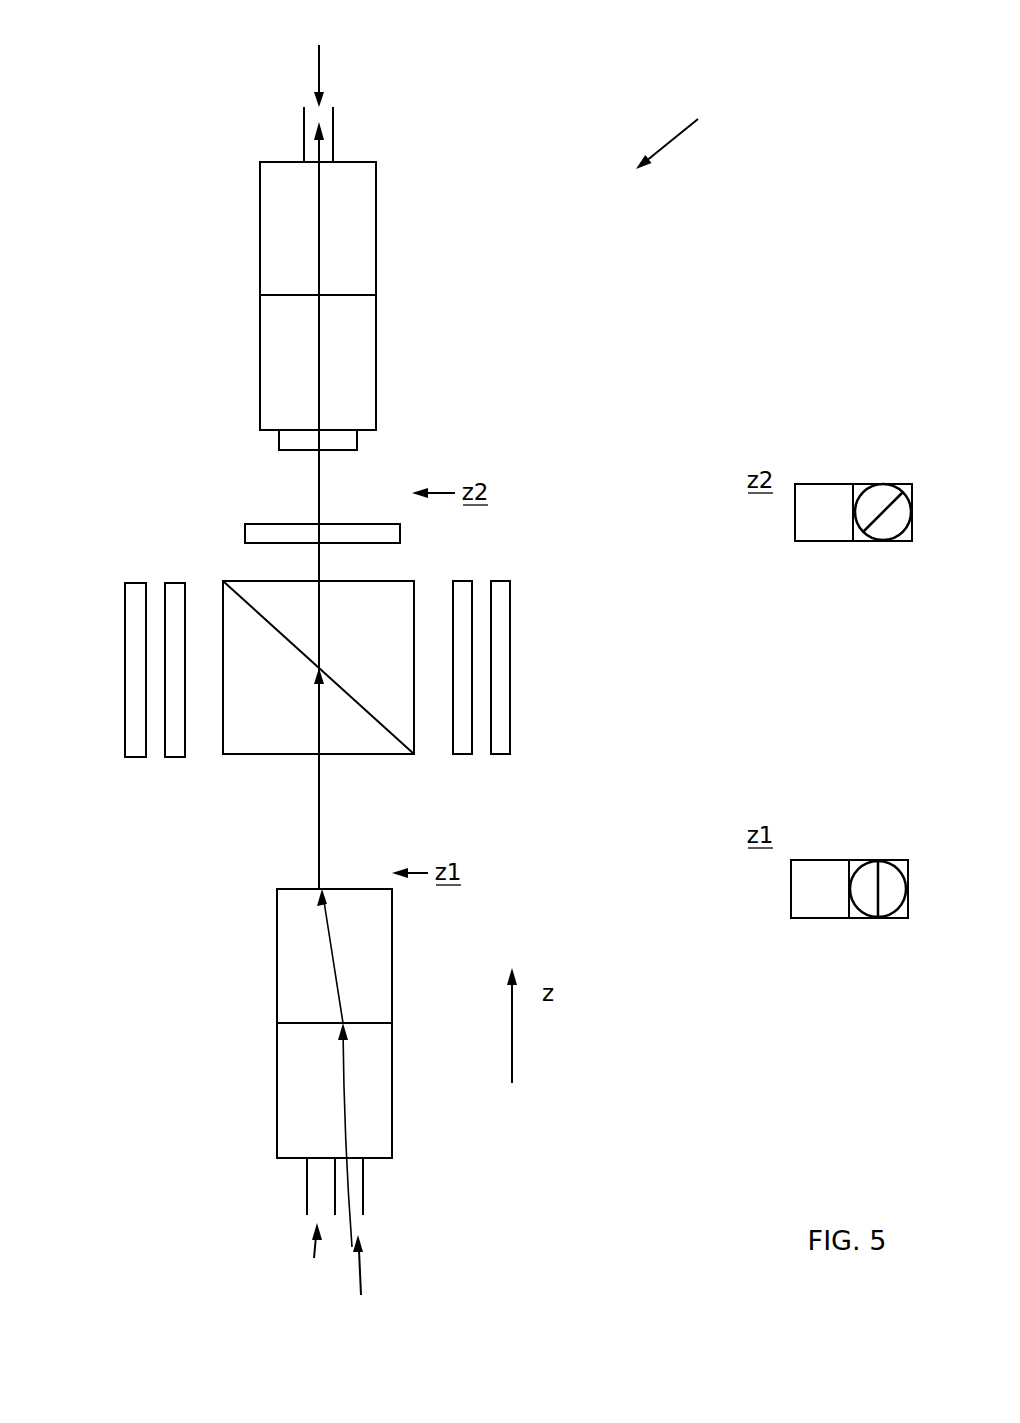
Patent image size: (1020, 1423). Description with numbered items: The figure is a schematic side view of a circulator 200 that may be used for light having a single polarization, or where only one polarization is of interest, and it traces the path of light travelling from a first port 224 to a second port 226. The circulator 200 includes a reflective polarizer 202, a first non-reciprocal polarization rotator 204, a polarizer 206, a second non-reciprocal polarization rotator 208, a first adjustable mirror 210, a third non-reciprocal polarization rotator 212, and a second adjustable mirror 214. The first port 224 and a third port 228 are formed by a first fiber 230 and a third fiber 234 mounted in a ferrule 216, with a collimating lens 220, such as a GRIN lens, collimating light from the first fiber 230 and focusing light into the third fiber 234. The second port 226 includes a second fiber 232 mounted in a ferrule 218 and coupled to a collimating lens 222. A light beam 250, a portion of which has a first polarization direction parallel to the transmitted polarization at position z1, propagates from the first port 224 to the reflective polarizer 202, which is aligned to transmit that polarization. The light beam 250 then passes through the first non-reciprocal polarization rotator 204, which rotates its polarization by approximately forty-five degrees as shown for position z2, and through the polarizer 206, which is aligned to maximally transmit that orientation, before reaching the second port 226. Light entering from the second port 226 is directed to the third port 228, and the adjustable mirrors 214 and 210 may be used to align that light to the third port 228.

The circulator 200 is at (698, 139).
The reflective polarizer 202 is at (248, 757).
The first non-reciprocal polarization rotator 204 is at (264, 524).
The polarizer 206 is at (357, 441).
The second non-reciprocal polarization rotator 208 is at (460, 760).
The first adjustable mirror 210 is at (507, 760).
The third non-reciprocal polarization rotator 212 is at (173, 585).
The second adjustable mirror 214 is at (136, 585).
The ferrule 216 is at (277, 1083).
The ferrule 218 is at (377, 268).
The collimating lens 220 is at (278, 940).
The collimating lens 222 is at (377, 368).
The first port 224 is at (296, 1262).
The second port 226 is at (310, 54).
The third port 228 is at (367, 1282).
The first fiber 230 is at (364, 1195).
The second fiber 232 is at (335, 118).
The third fiber 234 is at (307, 1202).
The light beam 250 is at (319, 848).